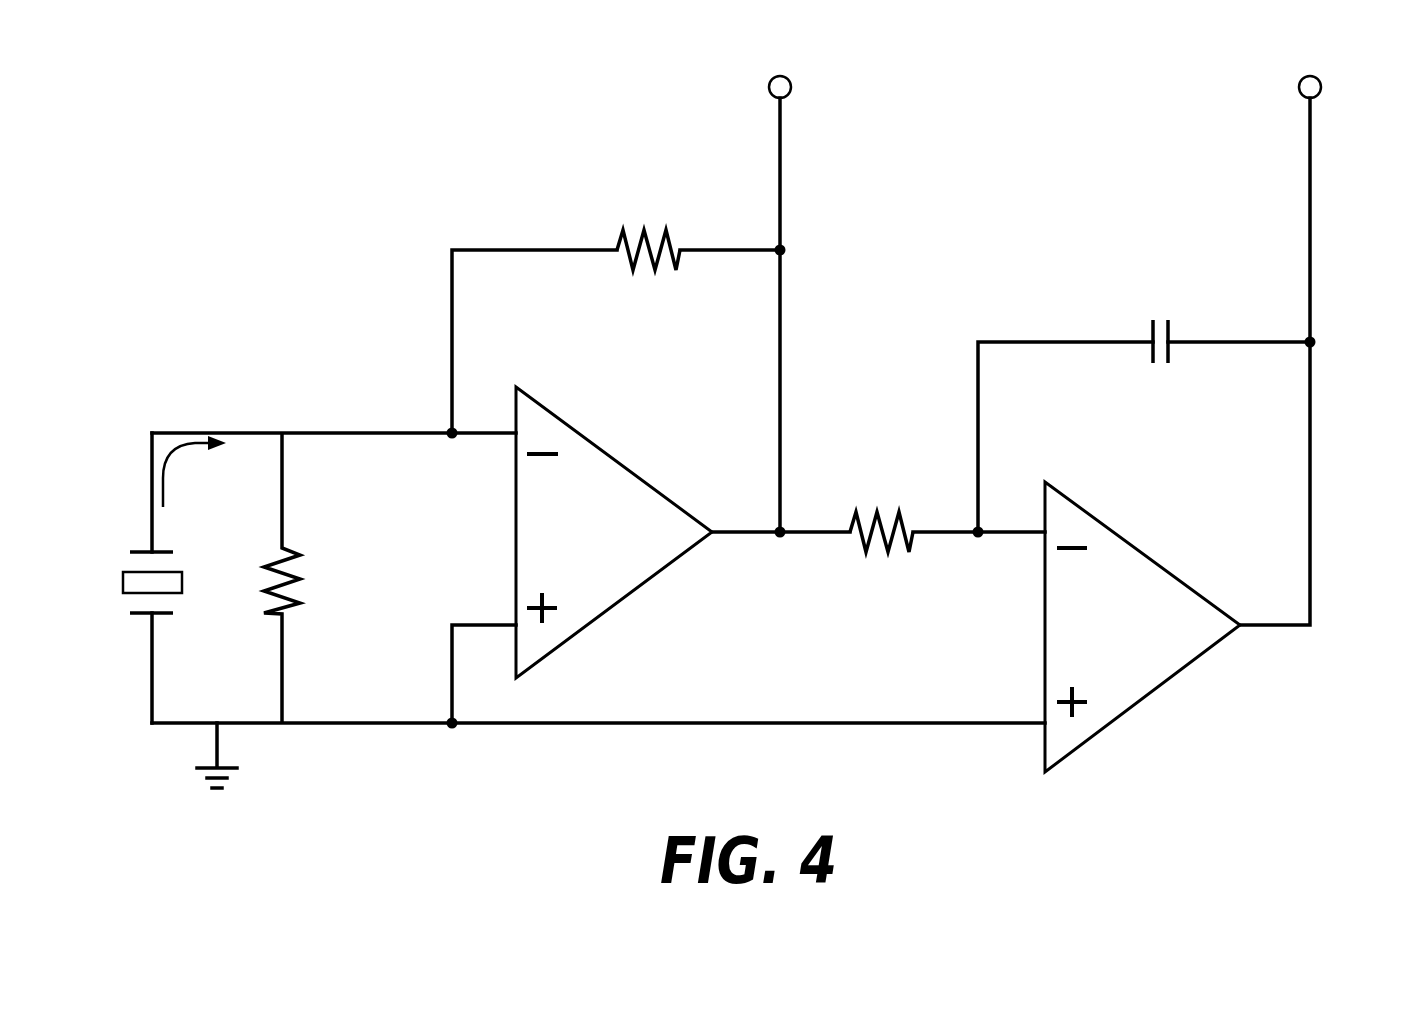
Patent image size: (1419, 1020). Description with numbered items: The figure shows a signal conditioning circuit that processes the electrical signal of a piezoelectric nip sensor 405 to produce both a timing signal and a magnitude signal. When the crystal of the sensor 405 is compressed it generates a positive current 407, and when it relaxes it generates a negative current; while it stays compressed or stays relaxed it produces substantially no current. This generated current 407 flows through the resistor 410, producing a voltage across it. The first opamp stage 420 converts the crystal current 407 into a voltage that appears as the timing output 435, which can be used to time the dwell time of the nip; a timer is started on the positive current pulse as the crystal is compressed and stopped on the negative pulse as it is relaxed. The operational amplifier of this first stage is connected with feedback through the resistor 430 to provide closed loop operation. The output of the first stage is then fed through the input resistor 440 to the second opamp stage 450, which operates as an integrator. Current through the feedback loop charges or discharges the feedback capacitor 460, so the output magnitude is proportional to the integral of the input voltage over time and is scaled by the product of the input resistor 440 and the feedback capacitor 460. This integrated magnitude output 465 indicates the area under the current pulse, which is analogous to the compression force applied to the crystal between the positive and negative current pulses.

The piezoelectric nip sensor 405 is at (120, 580).
The positive current 407 is at (163, 468).
The resistor RVI 410 is at (275, 610).
The first opamp stage 420 is at (615, 605).
The feedback resistor 430 is at (645, 230).
The timing output voltage 435 is at (792, 85).
The input resistor 440 is at (898, 510).
The second opamp stage 450 is at (1142, 702).
The feedback capacitor 460 is at (1150, 328).
The magnitude output terminal 465 is at (1298, 85).